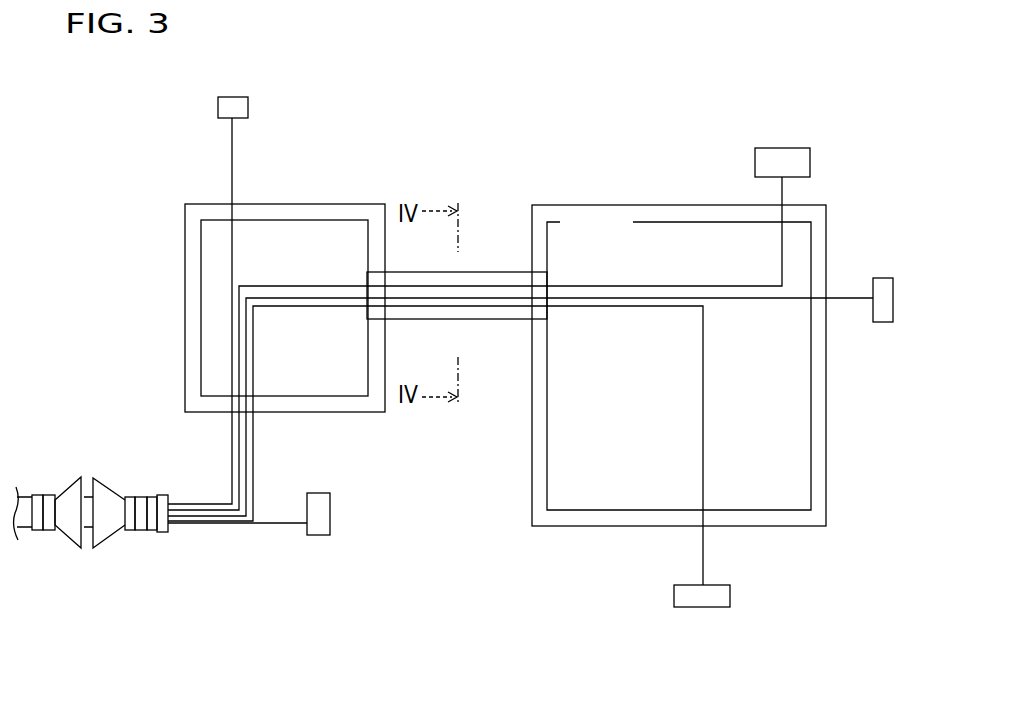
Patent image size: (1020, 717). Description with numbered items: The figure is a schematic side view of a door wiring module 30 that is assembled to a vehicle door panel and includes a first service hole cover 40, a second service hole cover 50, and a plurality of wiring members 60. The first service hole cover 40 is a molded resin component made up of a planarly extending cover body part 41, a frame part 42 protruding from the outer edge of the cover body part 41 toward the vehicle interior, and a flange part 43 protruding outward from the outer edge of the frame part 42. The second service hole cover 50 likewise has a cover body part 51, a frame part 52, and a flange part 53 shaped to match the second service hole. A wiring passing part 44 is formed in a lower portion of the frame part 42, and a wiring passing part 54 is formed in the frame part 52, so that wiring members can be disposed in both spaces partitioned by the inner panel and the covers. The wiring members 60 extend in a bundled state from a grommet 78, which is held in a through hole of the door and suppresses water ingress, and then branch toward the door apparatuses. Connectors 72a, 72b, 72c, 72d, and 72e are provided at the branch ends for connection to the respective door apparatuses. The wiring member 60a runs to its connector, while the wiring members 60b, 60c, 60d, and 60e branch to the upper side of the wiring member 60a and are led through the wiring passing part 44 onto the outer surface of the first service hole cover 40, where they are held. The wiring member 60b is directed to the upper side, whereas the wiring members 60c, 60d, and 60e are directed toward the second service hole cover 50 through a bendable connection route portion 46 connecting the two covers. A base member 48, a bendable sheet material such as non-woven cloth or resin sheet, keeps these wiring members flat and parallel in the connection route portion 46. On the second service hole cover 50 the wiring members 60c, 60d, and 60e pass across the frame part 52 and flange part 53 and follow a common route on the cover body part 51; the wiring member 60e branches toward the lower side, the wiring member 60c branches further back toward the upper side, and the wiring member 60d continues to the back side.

The door wiring module 30 is at (720, 314).
The first service hole cover 40 is at (236, 308).
The cover body part 41 is at (208, 254).
The frame part 42 is at (202, 284).
The flange part 43 is at (185, 311).
The wiring passing part 44 is at (233, 221).
The connection route portion 46 is at (493, 272).
The base member 48 is at (493, 319).
The second service hole cover 50 is at (720, 365).
The cover body part 51 is at (833, 409).
The frame part 52 is at (812, 440).
The flange part 53 is at (825, 470).
The wiring passing part 54 is at (782, 223).
The wiring member 60 is at (520, 362).
The wiring member 60a is at (267, 523).
The first wiring member 60b is at (232, 152).
The second wiring member 60c is at (681, 286).
The second wiring member 60d is at (733, 299).
The second wiring member 60e is at (703, 387).
The connector 72a is at (317, 537).
The connector 72b is at (248, 108).
The connector 72c is at (810, 162).
The connector 72d is at (883, 323).
The connector 72e is at (730, 597).
The grommet 78 is at (82, 477).